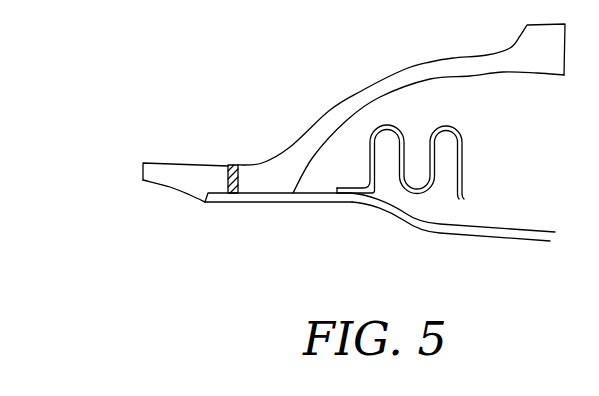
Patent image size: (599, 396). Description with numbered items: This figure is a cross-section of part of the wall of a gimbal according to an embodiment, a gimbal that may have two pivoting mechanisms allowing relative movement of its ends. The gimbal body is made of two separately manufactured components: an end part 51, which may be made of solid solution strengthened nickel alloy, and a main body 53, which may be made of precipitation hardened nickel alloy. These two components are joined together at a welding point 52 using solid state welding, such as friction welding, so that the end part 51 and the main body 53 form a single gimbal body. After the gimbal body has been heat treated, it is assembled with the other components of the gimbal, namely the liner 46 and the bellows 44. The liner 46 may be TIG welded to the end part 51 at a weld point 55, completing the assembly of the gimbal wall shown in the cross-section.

The bellows 44 is at (465, 168).
The liner 46 is at (380, 217).
The end part 51 is at (123, 166).
The welding point 52 is at (232, 160).
The main body 53 is at (348, 88).
The weld point 55 is at (200, 212).